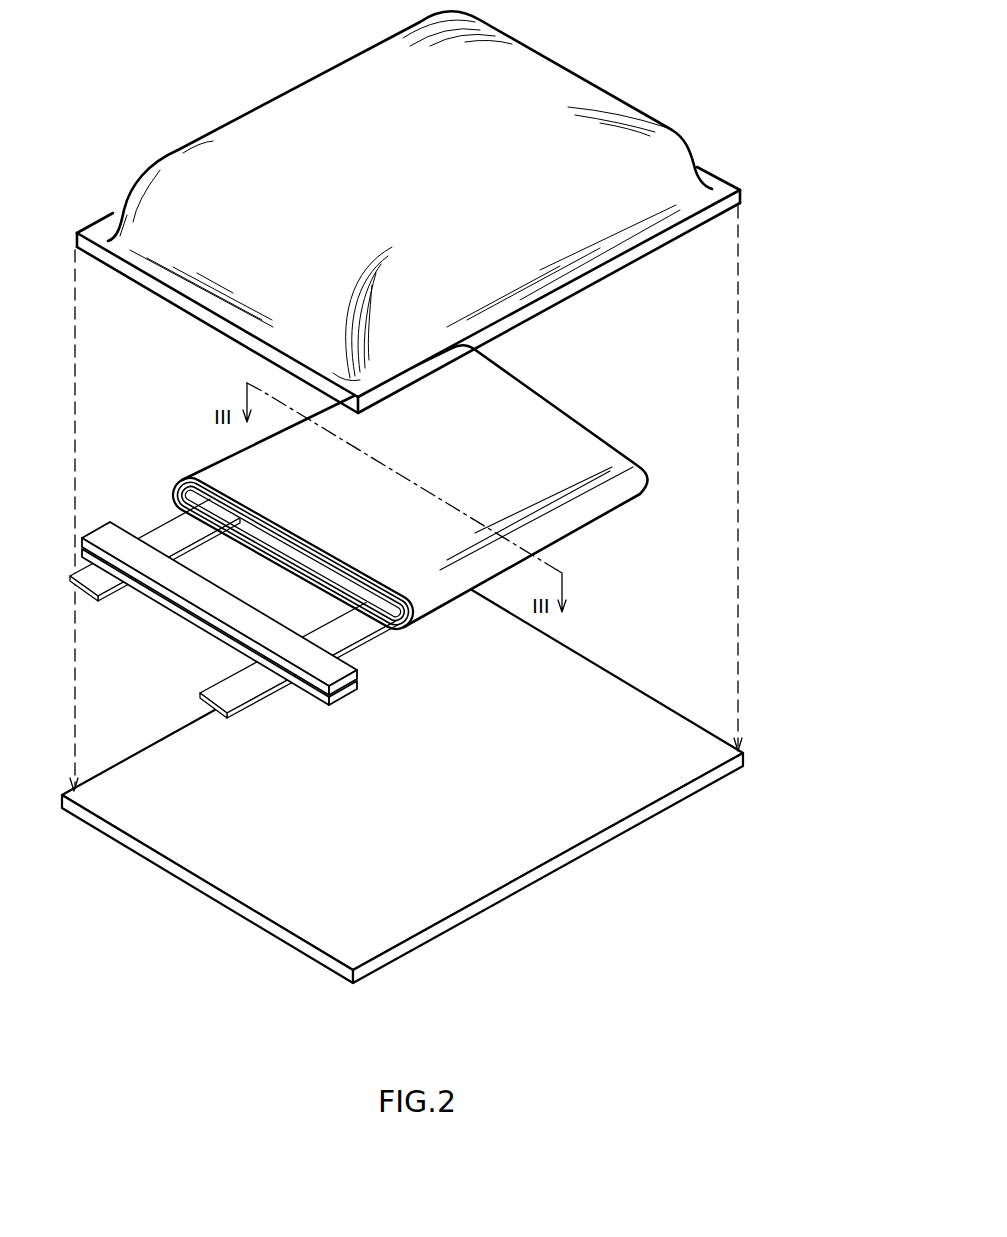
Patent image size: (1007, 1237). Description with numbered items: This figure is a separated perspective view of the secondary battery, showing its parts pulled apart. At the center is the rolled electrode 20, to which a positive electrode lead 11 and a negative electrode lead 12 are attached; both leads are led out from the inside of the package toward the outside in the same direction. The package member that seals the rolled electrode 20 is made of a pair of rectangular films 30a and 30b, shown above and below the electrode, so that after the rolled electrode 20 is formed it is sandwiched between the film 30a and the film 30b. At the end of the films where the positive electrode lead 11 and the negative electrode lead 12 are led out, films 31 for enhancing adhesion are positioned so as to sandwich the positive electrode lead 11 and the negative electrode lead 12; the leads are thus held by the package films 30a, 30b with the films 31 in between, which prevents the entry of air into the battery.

The film 30a is at (547, 67).
The film 30b is at (583, 678).
The rolled electrode 20 is at (514, 427).
The positive electrode lead 11 is at (158, 537).
The negative electrode lead 12 is at (230, 688).
The film for enhancing adhesion 31 is at (100, 537).